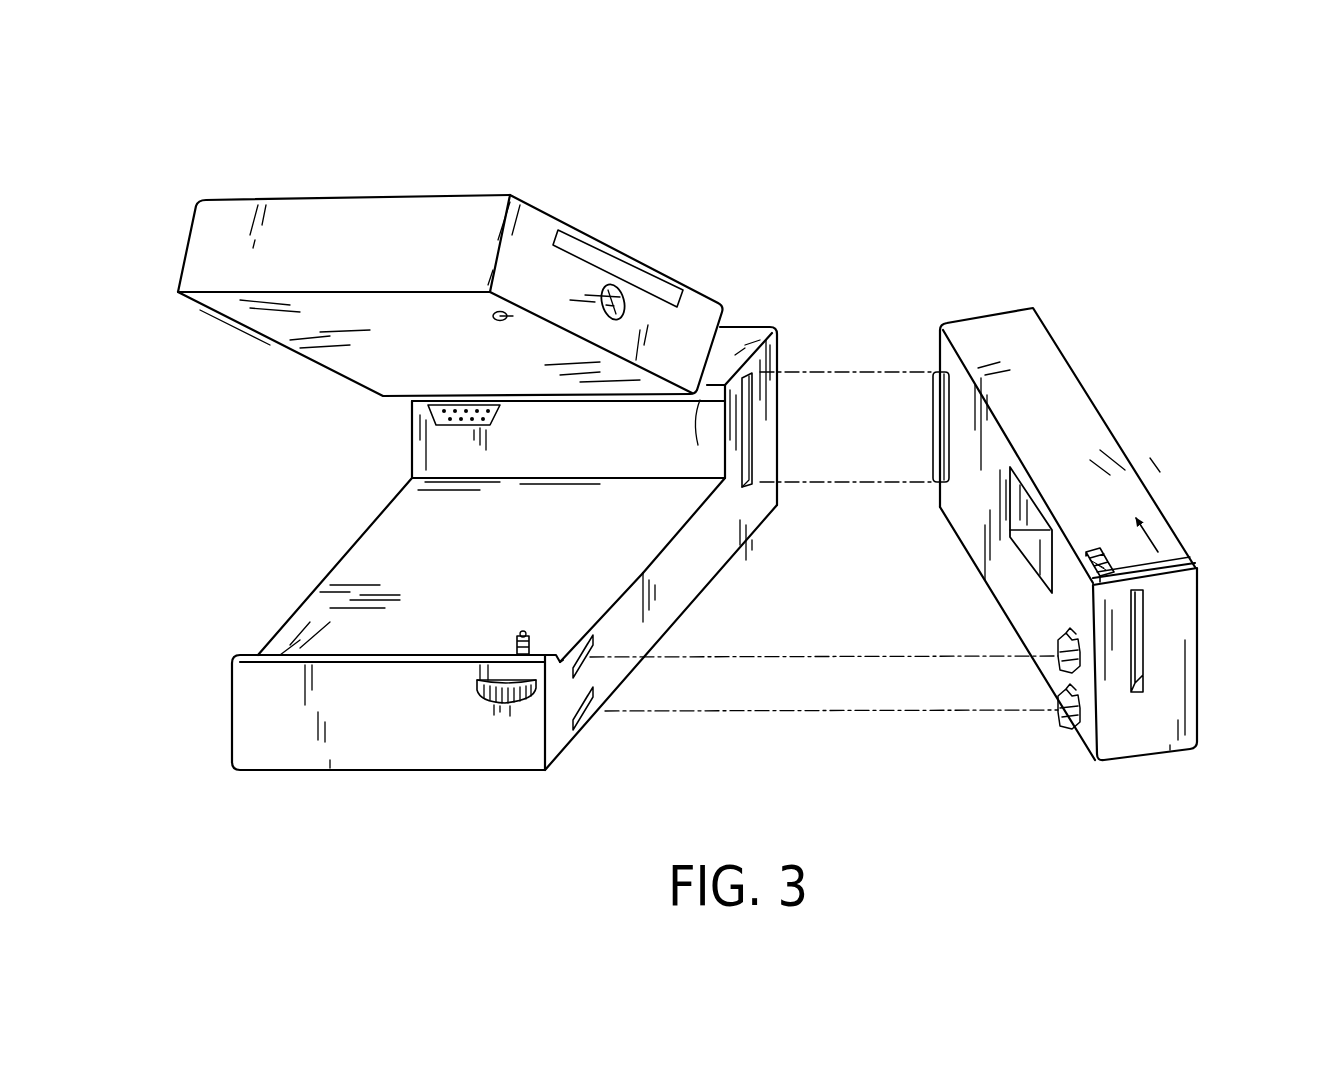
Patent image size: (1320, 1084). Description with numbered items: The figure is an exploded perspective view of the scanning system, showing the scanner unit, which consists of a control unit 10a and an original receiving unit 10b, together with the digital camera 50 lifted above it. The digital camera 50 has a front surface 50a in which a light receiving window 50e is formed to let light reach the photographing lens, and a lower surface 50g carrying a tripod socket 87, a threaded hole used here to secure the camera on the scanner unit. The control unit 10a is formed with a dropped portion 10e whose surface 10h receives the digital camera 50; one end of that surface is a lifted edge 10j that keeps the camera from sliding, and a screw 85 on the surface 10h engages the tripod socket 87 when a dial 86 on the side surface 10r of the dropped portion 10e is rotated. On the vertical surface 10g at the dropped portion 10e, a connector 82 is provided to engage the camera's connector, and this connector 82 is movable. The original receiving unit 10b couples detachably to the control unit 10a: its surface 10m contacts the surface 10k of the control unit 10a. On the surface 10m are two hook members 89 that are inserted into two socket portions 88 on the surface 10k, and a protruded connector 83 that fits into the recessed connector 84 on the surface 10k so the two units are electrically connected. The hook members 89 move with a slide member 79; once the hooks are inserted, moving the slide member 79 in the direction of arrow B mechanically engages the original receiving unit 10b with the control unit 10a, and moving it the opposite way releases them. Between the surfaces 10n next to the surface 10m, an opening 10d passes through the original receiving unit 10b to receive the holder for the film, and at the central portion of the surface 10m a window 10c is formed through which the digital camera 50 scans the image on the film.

The digital camera 50 is at (341, 188).
The front surface 50a is at (555, 252).
The light receiving window 50e is at (628, 300).
The lower surface 50g is at (264, 312).
The tripod socket 87 is at (496, 320).
The control unit 10a is at (240, 742).
The side surface 10r is at (246, 690).
The dropped portion 10e is at (372, 584).
The surface 10h is at (330, 598).
The lifted edge 10j is at (556, 662).
The surface 10k is at (715, 548).
The vertical surface 10g is at (702, 428).
The connector 84 is at (748, 430).
The connector 82 is at (428, 415).
The screw 85 is at (515, 634).
The dial 86 is at (490, 702).
The socket portions 88 is at (585, 668).
The original receiving unit 10b is at (1064, 400).
The surface 10m is at (940, 345).
The surfaces 10n is at (985, 320).
The window 10c is at (1040, 578).
The connector 83 is at (935, 437).
The slide member 79 is at (1108, 548).
The arrow B is at (1150, 526).
The opening 10d is at (1143, 654).
The hook members 89 is at (1062, 665).